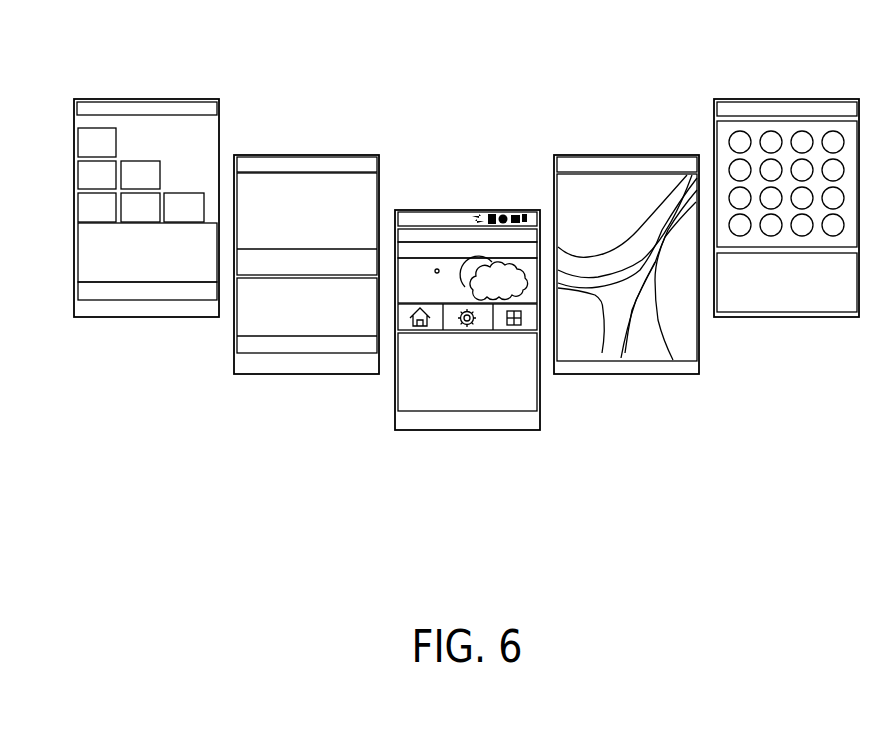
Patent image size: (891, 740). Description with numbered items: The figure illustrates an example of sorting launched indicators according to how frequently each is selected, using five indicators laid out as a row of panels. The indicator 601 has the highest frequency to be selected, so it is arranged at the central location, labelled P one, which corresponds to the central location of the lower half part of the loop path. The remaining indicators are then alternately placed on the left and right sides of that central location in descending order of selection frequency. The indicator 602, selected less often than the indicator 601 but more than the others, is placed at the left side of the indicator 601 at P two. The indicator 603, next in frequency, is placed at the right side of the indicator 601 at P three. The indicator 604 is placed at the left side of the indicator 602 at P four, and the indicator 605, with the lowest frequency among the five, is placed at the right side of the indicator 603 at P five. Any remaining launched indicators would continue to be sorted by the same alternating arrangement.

The indicator 601 is at (465, 210).
The indicator 602 is at (306, 155).
The indicator 603 is at (626, 155).
The indicator 604 is at (148, 99).
The indicator 605 is at (785, 98).